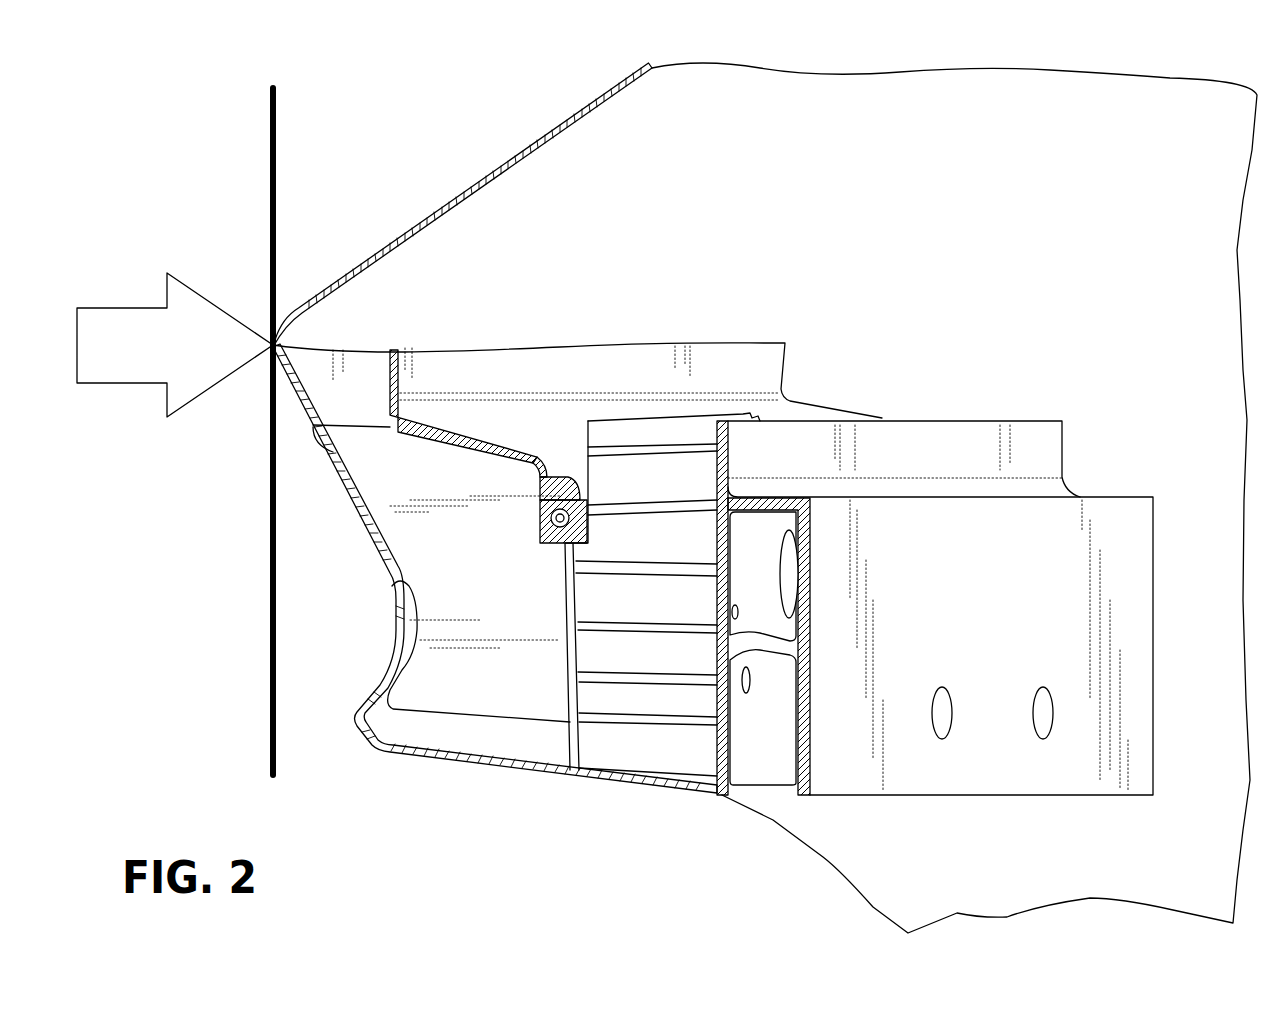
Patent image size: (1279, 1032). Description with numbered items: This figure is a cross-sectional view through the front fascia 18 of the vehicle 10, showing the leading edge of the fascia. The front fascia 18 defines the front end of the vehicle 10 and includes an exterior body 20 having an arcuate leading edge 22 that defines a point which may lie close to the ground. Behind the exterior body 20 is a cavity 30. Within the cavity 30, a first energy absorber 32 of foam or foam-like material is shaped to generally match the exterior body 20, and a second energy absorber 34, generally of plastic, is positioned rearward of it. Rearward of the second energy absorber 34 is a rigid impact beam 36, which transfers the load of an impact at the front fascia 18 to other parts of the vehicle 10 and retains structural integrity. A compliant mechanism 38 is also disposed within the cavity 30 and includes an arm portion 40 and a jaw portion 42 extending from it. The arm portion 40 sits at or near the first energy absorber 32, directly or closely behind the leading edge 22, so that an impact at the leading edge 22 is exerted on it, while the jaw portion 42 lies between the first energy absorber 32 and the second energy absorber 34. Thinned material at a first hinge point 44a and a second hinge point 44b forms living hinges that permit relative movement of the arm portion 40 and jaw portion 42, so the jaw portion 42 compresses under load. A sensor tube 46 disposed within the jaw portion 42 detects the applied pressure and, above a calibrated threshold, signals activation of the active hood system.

The vehicle 10 is at (1119, 68).
The front fascia 18 is at (577, 257).
The exterior body 20 is at (357, 264).
The arcuate leading edge 22 is at (270, 348).
The cavity 30 is at (676, 602).
The first energy absorber 32 is at (453, 610).
The second energy absorber 34 is at (643, 657).
The impact beam 36 is at (852, 720).
The compliant mechanism 38 is at (467, 367).
The arm portion 40 is at (415, 502).
The jaw portion 42 is at (540, 489).
The first hinge point 44a is at (538, 455).
The second hinge point 44b is at (537, 533).
The sensor tube 46 is at (562, 543).